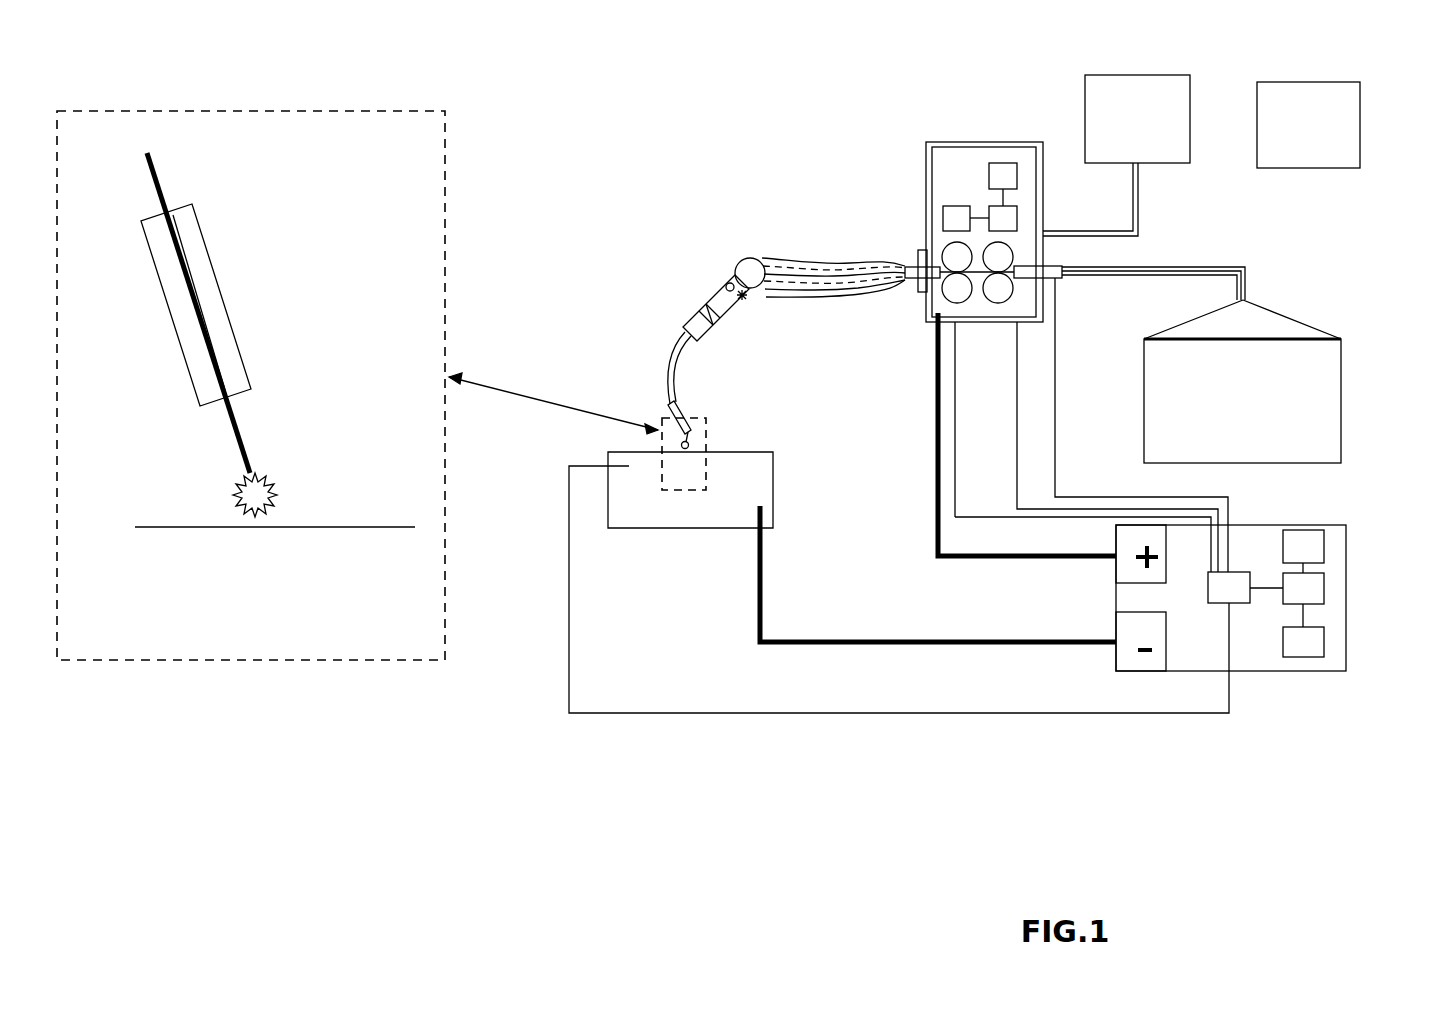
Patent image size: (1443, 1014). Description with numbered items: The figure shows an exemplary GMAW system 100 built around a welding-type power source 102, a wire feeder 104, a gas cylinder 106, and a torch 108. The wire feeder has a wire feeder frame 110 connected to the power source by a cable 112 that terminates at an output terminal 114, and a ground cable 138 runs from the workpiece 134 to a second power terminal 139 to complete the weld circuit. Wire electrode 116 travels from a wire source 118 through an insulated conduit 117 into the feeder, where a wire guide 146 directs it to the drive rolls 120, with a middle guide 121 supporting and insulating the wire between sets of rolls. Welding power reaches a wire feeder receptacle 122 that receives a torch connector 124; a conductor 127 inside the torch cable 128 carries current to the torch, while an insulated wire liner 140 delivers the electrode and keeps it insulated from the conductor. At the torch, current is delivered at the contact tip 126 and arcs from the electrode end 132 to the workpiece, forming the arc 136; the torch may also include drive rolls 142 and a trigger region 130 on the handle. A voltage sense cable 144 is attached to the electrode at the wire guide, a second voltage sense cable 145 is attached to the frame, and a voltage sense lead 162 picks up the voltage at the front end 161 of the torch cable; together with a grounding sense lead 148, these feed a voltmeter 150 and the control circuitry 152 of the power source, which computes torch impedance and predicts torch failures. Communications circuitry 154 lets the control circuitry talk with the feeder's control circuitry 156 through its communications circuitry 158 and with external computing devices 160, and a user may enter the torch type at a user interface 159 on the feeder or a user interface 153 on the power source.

The GMAW system 100 is at (665, 150).
The welding-type power source 102 is at (1270, 672).
The wire feeder 104 is at (1040, 145).
The gas cylinder 106 is at (1125, 75).
The torch 108 is at (702, 285).
The wire feeder frame 110 is at (960, 143).
The cable 112 is at (1030, 560).
The output terminal 114 is at (1140, 585).
The wire electrode 116 is at (1043, 267).
The insulated conduit 117 is at (1237, 268).
The wire source 118 is at (1300, 322).
The drive rolls 120 is at (1015, 243).
The middle guide 121 is at (960, 305).
The wire feeder receptacle 122 is at (918, 255).
The torch connector 124 is at (912, 300).
The contact tip 126 is at (212, 278).
The conductor 127 is at (745, 258).
The torch cable 128 is at (763, 257).
The torch neck 130 is at (675, 372).
The end of the wire electrode 132 is at (262, 478).
The workpiece 134 is at (222, 532).
The arc 136 is at (272, 492).
The ground cable 138 is at (910, 645).
The second power terminal 139 is at (1112, 670).
The insulated wire liner 140 is at (840, 295).
The drive rolls 142 is at (740, 300).
The voltage sense cable 144 is at (1057, 465).
The second voltage sense cable 145 is at (1017, 455).
The wire guide 146 is at (1057, 300).
The grounding sense lead 148 is at (568, 695).
The voltmeter 150 is at (1240, 570).
The control circuitry 152 is at (1325, 580).
The user interface 153 is at (1325, 535).
The communications circuitry 154 is at (1325, 642).
The control circuitry 156 is at (955, 205).
The communications circuitry 158 is at (1017, 217).
The user interface 159 is at (1003, 163).
The external computing devices 160 is at (1295, 82).
The front end of the torch cable 161 is at (750, 294).
The voltage sense lead 162 is at (820, 290).